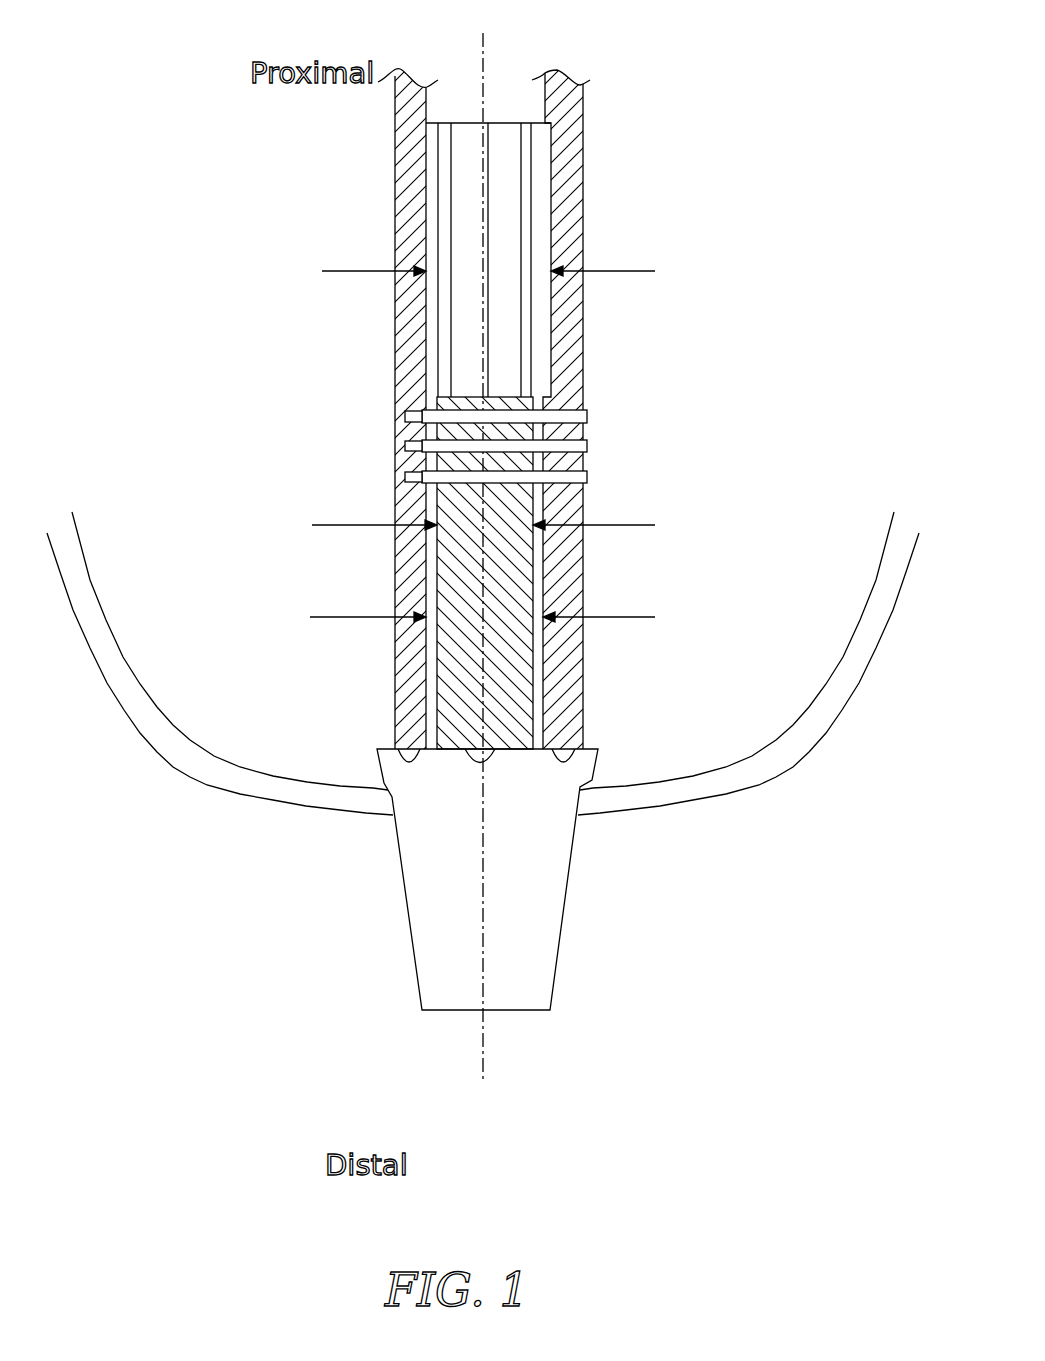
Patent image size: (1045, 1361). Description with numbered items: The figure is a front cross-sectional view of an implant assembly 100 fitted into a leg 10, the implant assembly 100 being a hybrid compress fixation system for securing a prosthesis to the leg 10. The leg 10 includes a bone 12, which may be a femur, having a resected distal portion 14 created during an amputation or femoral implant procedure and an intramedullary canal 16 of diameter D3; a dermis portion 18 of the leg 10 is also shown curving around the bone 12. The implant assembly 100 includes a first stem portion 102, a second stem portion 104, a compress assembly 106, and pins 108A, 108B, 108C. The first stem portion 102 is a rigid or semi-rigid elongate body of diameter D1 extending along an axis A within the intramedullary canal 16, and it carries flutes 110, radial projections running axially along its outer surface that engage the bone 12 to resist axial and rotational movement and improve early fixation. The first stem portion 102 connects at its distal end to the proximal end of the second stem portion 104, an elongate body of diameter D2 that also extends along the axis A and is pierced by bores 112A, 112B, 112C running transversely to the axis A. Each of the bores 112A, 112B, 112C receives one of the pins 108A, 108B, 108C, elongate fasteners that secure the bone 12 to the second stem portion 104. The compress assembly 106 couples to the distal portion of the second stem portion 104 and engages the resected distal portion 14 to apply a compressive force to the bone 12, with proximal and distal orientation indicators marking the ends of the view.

The leg 10 is at (483, 546).
The implant assembly 100 is at (497, 546).
The bone 12 is at (397, 225).
The resected distal portion 14 is at (393, 738).
The intramedullary canal 16 is at (543, 725).
The dermis portion 18 is at (90, 604).
The first stem portion 102 is at (545, 260).
The second stem portion 104 is at (523, 587).
The compress assembly 106 is at (542, 927).
The pin 108A is at (587, 416).
The pin 108B is at (587, 446).
The pin 108C is at (587, 477).
The flutes 110 is at (443, 257).
The bore 112A is at (414, 412).
The bore 112B is at (414, 441).
The bore 112C is at (414, 472).
The diameter of first stem portion D1 is at (469, 274).
The diameter of second stem portion D2 is at (465, 529).
The diameter of intramedullary canal D3 is at (465, 621).
The axis A is at (483, 1070).